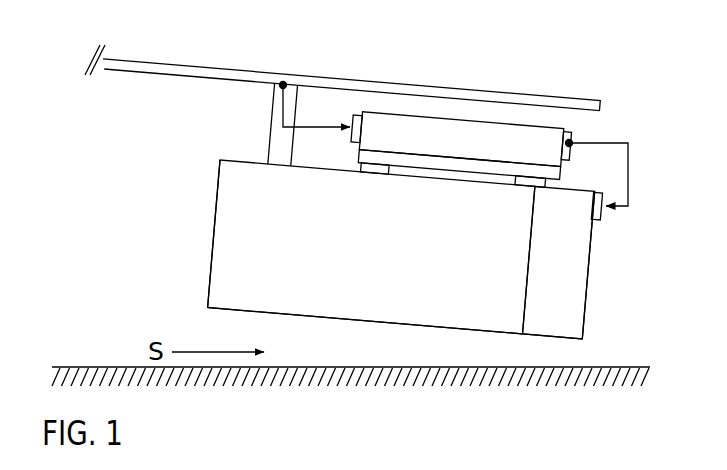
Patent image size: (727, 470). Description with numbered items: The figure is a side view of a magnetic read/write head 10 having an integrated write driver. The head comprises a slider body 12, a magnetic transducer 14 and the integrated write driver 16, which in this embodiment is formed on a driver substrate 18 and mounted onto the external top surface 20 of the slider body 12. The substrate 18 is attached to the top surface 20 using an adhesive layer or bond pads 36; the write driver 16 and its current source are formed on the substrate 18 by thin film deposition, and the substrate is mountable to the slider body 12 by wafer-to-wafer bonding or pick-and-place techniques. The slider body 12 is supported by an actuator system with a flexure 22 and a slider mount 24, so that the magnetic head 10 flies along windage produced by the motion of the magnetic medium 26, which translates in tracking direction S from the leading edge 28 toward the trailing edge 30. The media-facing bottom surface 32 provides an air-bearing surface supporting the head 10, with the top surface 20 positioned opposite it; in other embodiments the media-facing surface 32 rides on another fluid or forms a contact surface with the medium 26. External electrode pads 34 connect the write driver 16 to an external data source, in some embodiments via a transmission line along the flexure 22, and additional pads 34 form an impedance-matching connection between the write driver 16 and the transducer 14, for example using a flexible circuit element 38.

The magnetic read/write head 10 is at (76, 134).
The slider body 12 is at (227, 228).
The magnetic transducer 14 is at (573, 268).
The integrated write driver 16 is at (476, 153).
The driver substrate 18 is at (465, 163).
The external top surface 20 is at (399, 242).
The flexure 22 is at (448, 93).
The slider mount 24 is at (275, 122).
The magnetic medium 26 is at (118, 366).
The leading edge 28 is at (203, 261).
The trailing edge 30 is at (593, 294).
The media-facing bottom surface 32 is at (362, 323).
The external electrode pads 34 is at (354, 111).
The bond pads 36 is at (373, 168).
The flexible circuit element 38 is at (628, 178).